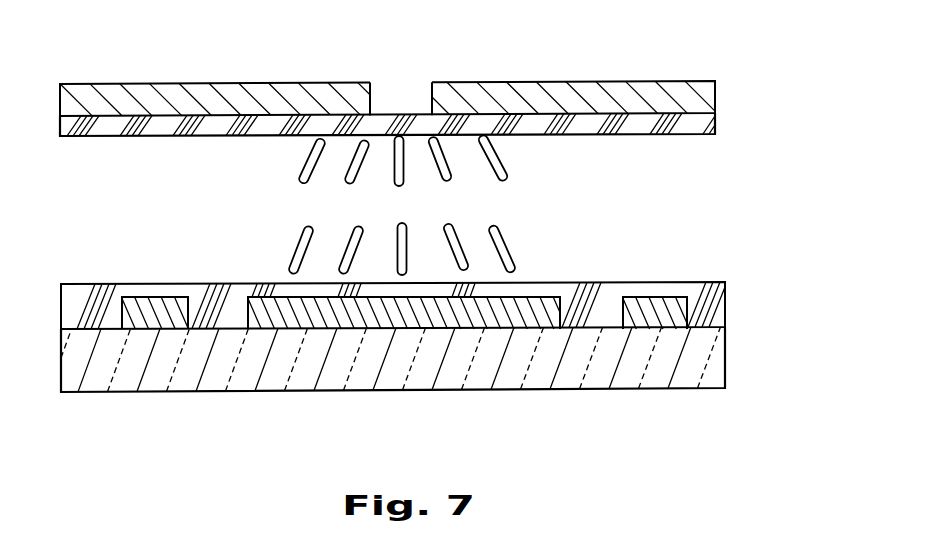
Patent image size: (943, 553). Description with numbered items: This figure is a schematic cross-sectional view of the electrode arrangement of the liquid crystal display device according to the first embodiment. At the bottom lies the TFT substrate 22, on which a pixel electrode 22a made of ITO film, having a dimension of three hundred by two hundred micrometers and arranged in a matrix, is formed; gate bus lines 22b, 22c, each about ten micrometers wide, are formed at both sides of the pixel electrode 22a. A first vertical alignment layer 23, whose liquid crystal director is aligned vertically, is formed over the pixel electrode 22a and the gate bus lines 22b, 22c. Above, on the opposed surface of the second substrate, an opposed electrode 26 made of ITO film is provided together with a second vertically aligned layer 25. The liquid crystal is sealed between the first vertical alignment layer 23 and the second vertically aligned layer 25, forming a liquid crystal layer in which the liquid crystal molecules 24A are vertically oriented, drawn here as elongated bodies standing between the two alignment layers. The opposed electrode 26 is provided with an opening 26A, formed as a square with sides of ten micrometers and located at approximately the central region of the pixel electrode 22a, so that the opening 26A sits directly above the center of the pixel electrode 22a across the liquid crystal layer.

The TFT substrate 22 is at (725, 357).
The pixel electrode 22a is at (547, 292).
The gate bus line 22b is at (138, 298).
The gate bus line 22c is at (653, 292).
The first vertical alignment layer 23 is at (725, 283).
The liquid crystal molecules 24A is at (506, 236).
The second vertically aligned layer 25 is at (715, 117).
The opposed electrode 26 is at (700, 85).
The opening 26A is at (432, 79).